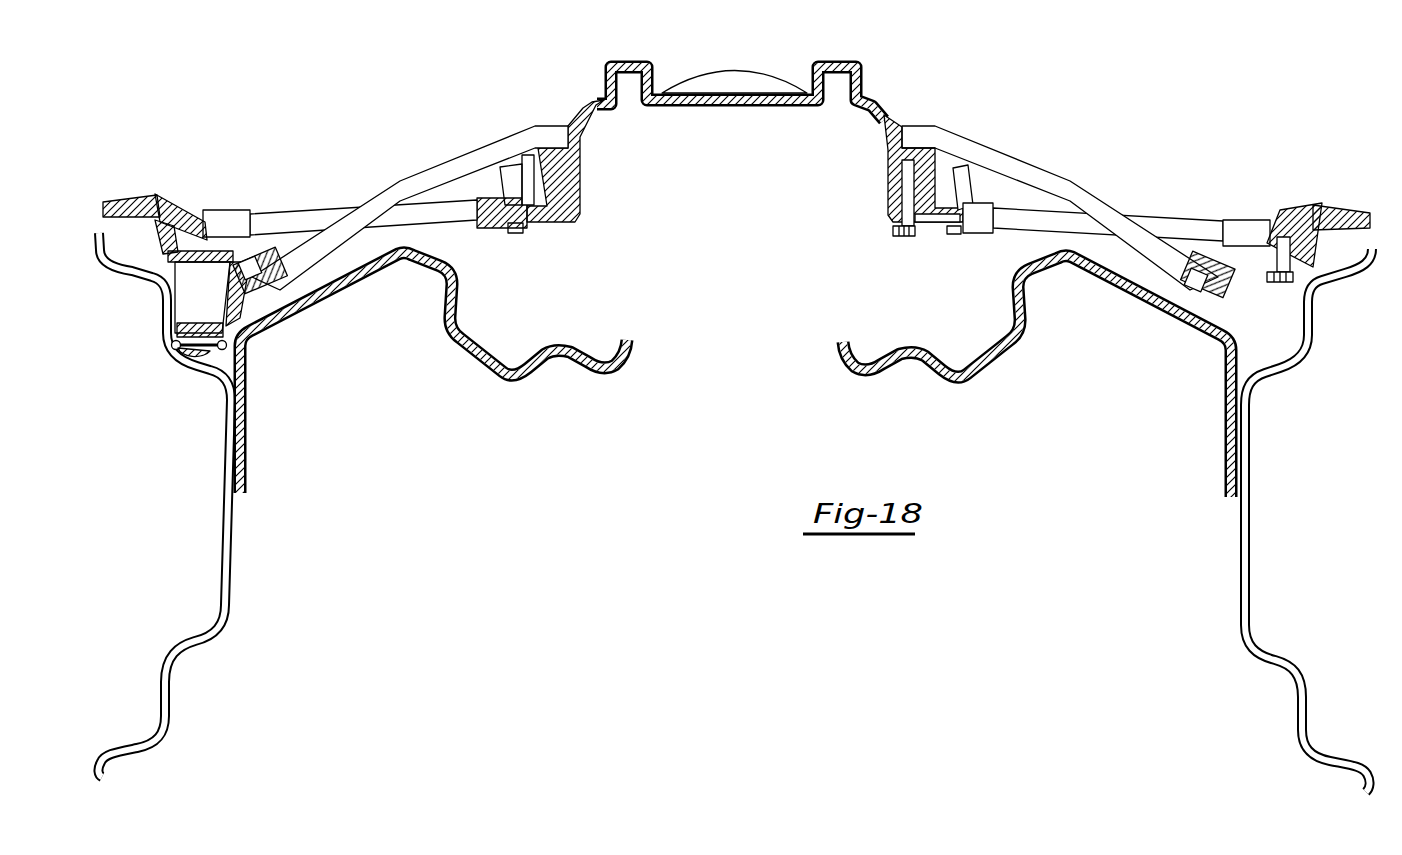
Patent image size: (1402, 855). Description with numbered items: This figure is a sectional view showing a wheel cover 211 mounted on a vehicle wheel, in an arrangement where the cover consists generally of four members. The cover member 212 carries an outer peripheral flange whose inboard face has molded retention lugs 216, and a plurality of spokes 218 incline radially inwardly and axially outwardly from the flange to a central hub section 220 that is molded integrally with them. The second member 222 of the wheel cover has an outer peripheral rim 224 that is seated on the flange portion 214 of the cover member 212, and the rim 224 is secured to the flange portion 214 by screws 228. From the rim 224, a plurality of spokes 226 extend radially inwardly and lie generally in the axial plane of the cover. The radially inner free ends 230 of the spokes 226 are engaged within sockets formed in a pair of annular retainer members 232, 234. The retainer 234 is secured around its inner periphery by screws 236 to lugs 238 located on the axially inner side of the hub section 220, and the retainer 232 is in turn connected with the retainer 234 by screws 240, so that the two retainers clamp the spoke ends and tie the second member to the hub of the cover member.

The cover 211 is at (675, 57).
The cover member 212 is at (588, 80).
The flange portion 214 is at (173, 152).
The retention lugs 216 is at (190, 358).
The spokes 218 is at (447, 137).
The central hub section 220 is at (583, 152).
The second member 222 is at (208, 202).
The outer peripheral rim 224 is at (173, 207).
The spokes 226 is at (285, 217).
The screws 228 is at (1283, 282).
The radially inner free ends 230 is at (987, 233).
The annular retainer member 232 is at (963, 197).
The annular retainer member 234 is at (935, 218).
The screws 236 is at (900, 240).
The lugs 238 is at (892, 180).
The screws 240 is at (955, 233).